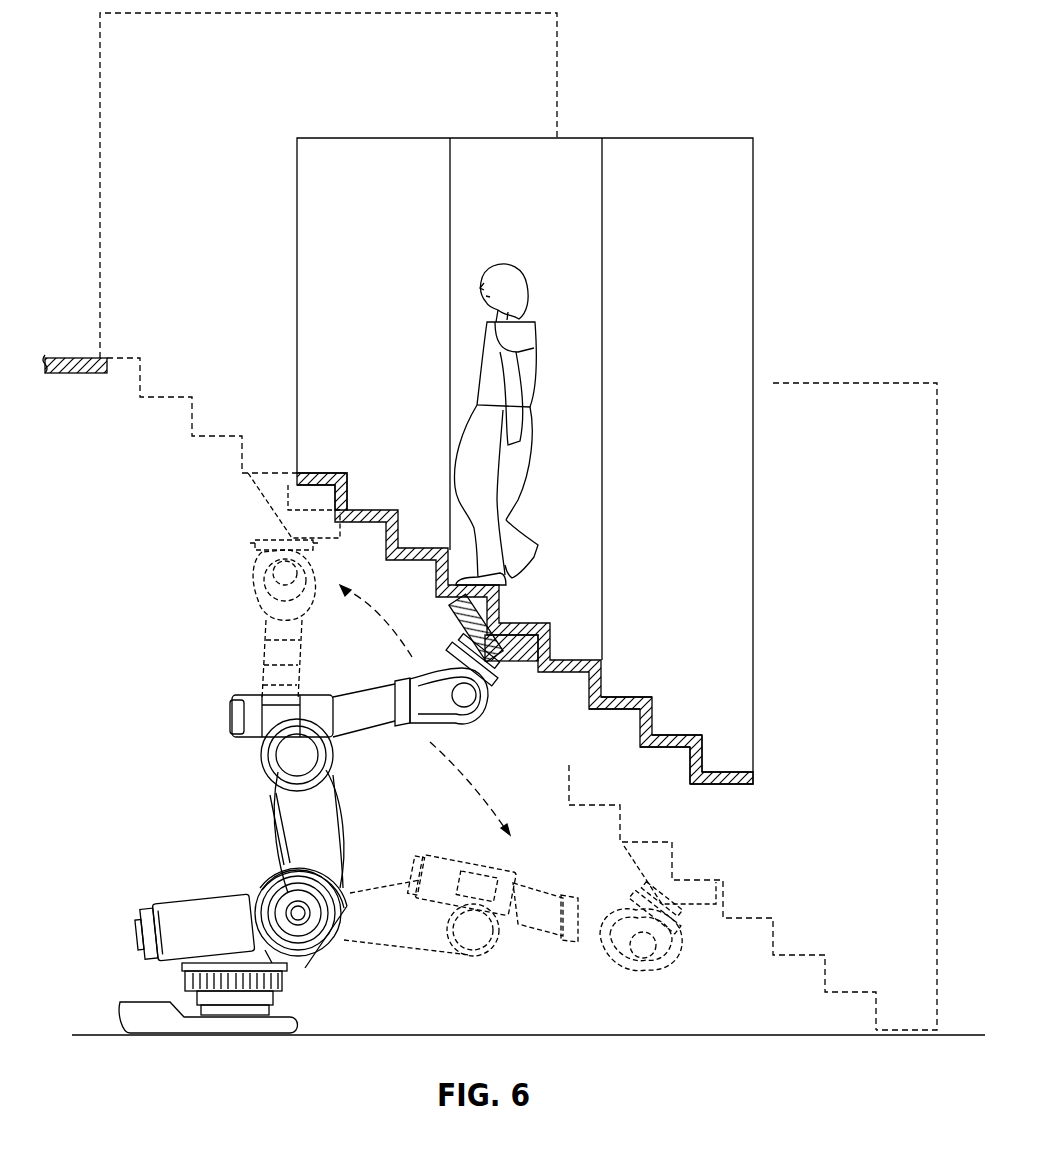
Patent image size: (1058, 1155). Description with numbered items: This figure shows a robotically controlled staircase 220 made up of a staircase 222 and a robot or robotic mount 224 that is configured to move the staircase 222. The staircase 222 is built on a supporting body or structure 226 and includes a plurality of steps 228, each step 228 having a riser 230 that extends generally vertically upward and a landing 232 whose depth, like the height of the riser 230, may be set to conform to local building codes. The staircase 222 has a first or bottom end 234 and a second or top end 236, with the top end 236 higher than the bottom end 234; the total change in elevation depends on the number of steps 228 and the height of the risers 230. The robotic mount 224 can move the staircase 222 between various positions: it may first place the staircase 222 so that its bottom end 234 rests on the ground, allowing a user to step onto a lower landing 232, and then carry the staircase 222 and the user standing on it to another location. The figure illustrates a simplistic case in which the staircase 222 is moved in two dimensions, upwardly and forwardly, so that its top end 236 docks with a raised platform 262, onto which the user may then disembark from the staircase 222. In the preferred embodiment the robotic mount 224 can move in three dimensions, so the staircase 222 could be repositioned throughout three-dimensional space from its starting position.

The robotically controlled staircase 220 is at (405, 753).
The staircase 222 is at (548, 493).
The robotic mount 224 is at (193, 577).
The supporting body 226 is at (621, 712).
The step 228 is at (562, 641).
The riser 230 is at (705, 752).
The landing 232 is at (687, 735).
The bottom end 234 is at (770, 784).
The top end 236 is at (285, 449).
The raised platform 262 is at (72, 374).